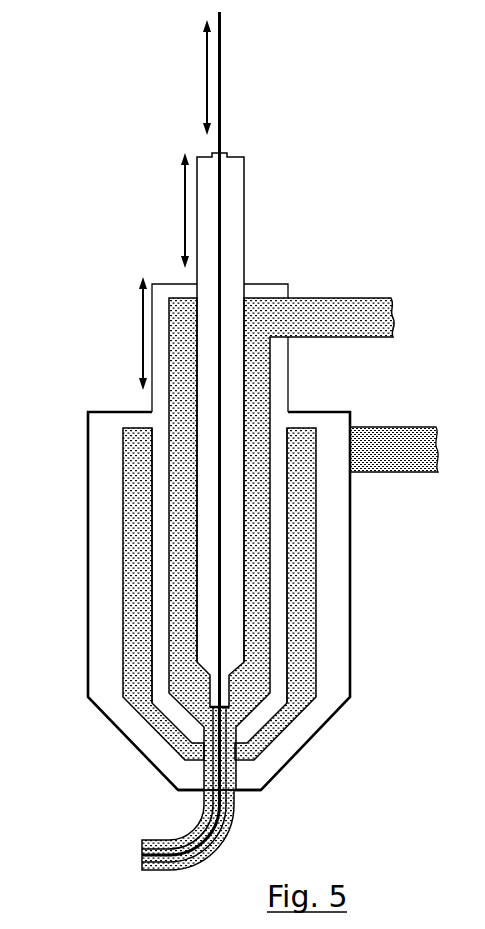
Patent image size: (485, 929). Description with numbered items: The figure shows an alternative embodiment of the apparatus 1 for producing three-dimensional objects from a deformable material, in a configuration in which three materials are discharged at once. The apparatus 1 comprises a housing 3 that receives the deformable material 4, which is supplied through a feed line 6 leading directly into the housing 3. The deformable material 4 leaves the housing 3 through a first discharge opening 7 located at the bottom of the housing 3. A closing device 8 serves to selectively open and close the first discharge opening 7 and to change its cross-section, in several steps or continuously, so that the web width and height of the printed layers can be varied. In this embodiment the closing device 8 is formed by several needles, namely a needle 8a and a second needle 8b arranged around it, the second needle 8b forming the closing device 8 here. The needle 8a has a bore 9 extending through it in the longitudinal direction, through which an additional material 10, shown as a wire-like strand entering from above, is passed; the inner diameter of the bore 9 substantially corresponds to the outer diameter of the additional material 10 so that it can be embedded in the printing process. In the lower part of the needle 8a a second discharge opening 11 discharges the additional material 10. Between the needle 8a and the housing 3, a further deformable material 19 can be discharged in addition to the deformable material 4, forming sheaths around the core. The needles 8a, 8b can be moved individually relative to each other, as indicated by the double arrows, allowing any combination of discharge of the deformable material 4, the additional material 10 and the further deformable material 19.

The apparatus 1 is at (248, 441).
The housing 3 is at (99, 416).
The deformable material 4 is at (135, 463).
The feed line 6 is at (393, 430).
The first discharge opening 7 is at (205, 770).
The closing device 8 is at (206, 544).
The needle 8a is at (237, 192).
The second needle 8b is at (180, 513).
The bore 9 is at (222, 274).
The additional material 10 is at (222, 70).
The second discharge opening 11 is at (240, 775).
The further deformable material 19 is at (172, 623).